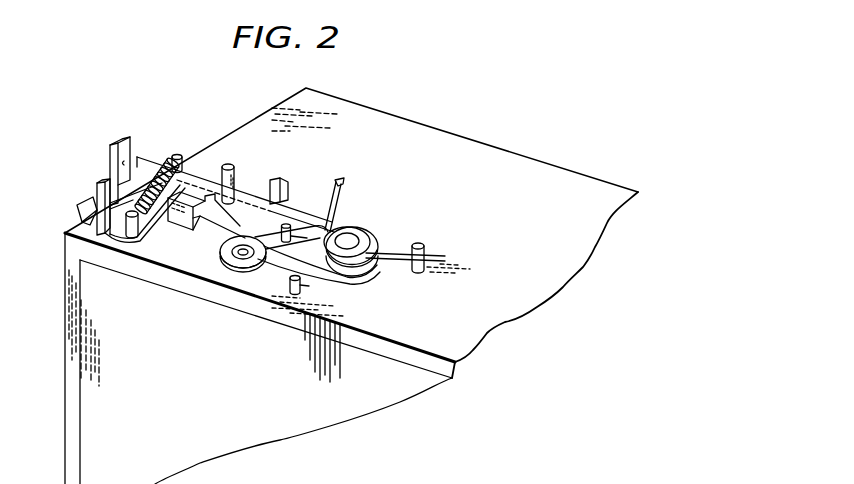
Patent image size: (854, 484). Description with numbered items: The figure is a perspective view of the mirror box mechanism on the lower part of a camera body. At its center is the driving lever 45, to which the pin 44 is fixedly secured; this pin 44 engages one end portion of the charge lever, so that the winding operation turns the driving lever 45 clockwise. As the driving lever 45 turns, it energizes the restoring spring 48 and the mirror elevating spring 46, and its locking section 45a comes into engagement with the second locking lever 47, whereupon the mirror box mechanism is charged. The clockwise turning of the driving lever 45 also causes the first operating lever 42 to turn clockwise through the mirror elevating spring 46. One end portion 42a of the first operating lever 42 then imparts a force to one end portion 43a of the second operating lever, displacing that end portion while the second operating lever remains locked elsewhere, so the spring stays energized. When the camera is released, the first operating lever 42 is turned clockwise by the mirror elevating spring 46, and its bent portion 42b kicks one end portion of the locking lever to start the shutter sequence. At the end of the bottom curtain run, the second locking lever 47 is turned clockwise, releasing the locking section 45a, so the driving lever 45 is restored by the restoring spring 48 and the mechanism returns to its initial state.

The first operating lever 42 is at (118, 228).
The one end portion of the first operating lever 42a is at (88, 190).
The bent portion of the first operating lever 42b is at (98, 208).
The one end portion of the second operating lever 43a is at (118, 137).
The pin 44 is at (231, 173).
The driving lever 45 is at (153, 160).
The locking section of the driving lever 45a is at (283, 181).
The mirror elevating spring 46 is at (147, 213).
The second locking lever 47 is at (342, 183).
The restoring spring 48 is at (397, 256).